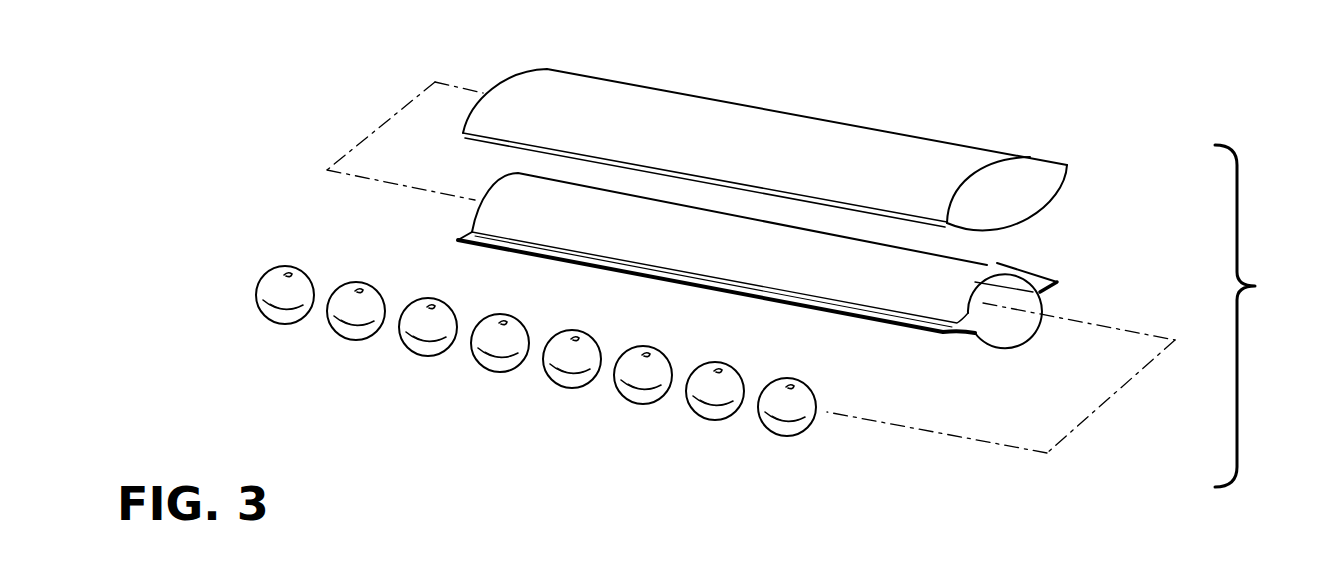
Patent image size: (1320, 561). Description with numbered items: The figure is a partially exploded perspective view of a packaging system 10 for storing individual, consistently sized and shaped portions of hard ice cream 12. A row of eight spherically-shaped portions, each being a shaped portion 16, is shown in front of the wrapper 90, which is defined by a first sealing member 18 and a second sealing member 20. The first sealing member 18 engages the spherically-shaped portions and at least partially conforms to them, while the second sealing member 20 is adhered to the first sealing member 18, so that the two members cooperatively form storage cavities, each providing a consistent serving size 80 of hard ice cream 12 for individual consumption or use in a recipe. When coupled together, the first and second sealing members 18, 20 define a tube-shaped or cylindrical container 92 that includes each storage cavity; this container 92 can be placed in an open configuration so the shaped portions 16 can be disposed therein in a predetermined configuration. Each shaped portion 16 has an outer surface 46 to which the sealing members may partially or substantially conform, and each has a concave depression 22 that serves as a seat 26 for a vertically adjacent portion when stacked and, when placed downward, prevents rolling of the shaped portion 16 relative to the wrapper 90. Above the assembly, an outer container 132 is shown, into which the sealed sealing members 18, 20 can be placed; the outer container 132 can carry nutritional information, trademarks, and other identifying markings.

The packaging system 10 is at (1252, 316).
The hard ice cream 12 is at (255, 270).
The shaped portion 16 is at (281, 260).
The first sealing member 18 is at (769, 267).
The second sealing member 20 is at (983, 322).
The concave depression 22 is at (784, 390).
The seat 26 is at (645, 349).
The outer surface 46 is at (497, 357).
The serving size 80 is at (555, 403).
The wrapper 90 is at (1051, 312).
The cylindrical container 92 is at (893, 339).
The outer container 132 is at (965, 137).